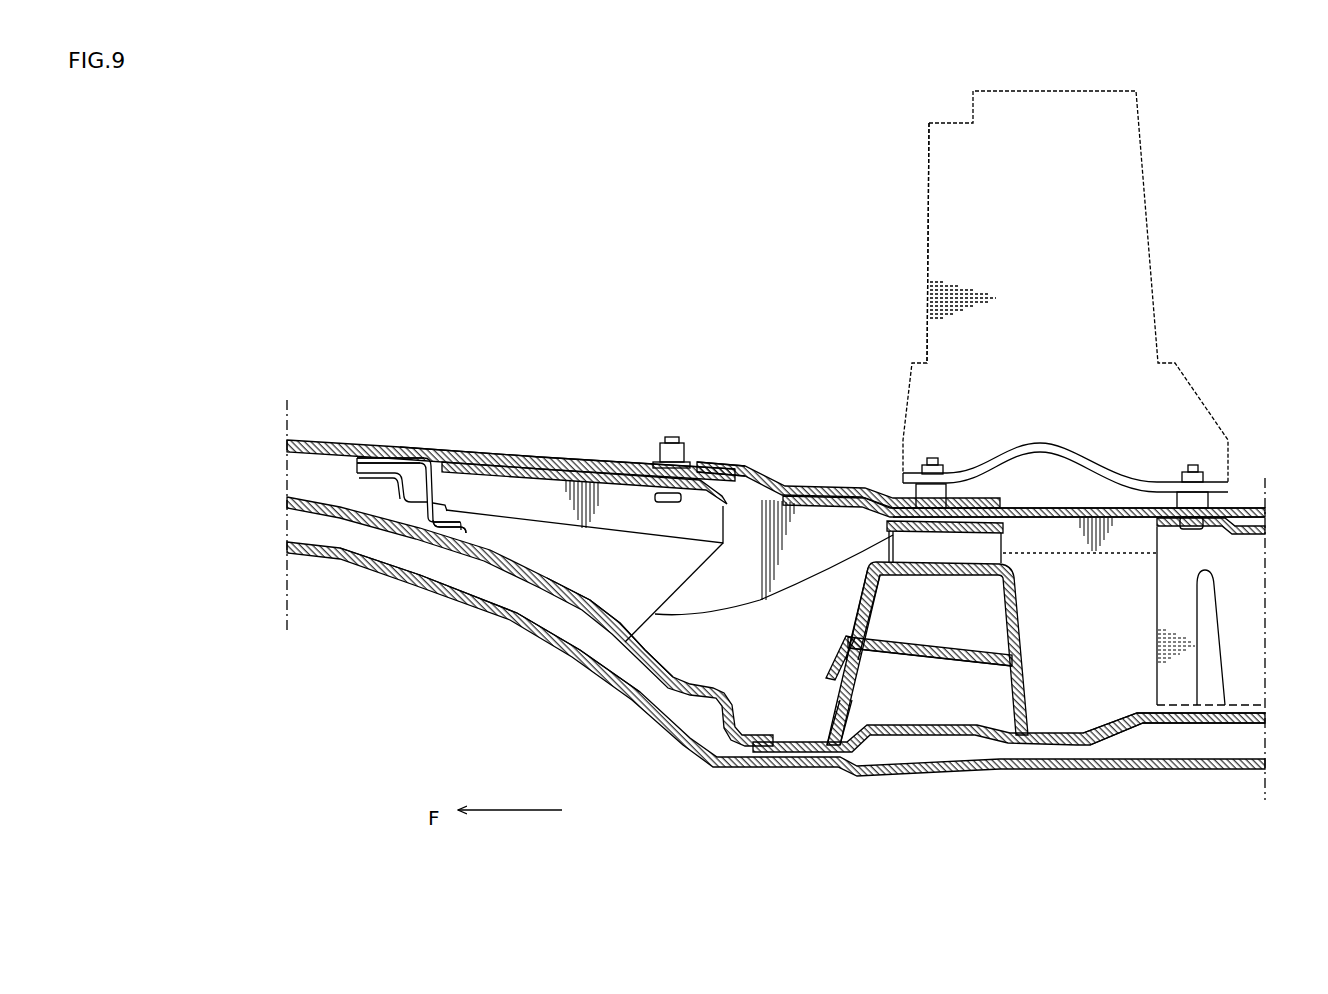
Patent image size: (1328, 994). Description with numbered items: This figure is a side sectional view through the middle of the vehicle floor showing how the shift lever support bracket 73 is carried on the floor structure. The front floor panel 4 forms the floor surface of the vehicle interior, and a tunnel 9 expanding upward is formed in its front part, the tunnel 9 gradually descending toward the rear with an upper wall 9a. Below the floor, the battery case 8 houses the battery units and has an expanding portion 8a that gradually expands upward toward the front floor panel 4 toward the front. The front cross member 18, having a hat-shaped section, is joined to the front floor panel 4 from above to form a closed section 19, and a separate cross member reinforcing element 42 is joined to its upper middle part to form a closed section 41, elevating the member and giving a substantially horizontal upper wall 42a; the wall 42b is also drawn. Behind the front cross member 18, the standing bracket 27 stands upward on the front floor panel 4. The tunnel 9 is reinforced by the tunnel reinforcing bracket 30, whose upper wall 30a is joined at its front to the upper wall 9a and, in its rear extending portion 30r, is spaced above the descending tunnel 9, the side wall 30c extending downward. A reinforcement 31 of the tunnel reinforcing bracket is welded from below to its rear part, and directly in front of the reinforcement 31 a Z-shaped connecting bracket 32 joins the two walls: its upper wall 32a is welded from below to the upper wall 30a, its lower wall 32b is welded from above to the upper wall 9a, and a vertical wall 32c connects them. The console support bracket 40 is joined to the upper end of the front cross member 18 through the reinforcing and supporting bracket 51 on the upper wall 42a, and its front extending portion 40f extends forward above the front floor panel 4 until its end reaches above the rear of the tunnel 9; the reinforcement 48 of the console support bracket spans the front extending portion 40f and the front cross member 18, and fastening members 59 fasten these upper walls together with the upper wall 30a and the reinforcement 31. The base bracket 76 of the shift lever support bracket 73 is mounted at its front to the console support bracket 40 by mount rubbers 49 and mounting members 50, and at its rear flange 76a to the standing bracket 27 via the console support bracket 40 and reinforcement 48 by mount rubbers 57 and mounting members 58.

The shift lever support bracket 73 is at (1148, 160).
The base bracket 76 is at (1113, 233).
The flange of the base bracket 76a is at (1038, 444).
The mounting member 50 is at (935, 457).
The mount rubber 49 is at (948, 496).
The mounting member 58 is at (1190, 468).
The mount rubber 57 is at (1208, 503).
The tunnel reinforcing bracket 30 is at (470, 446).
The upper wall of the tunnel reinforcing bracket 30a is at (507, 456).
The rear extending portion of the tunnel reinforcing bracket 30r is at (573, 464).
The side wall of the tunnel reinforcing bracket 30c is at (620, 612).
The reinforcement of the tunnel reinforcing bracket 31 is at (613, 478).
The fastening member 59 is at (680, 442).
The console support bracket 40 is at (760, 464).
The front extending portion of the console support bracket 40f is at (723, 462).
The reinforcement of the console support bracket 48 is at (810, 493).
The upper wall of the cross member reinforcing element 42a is at (1030, 512).
The reinforcing and supporting bracket 51 is at (888, 535).
The connecting bracket 32 is at (425, 498).
The upper wall of the connecting bracket 32a is at (386, 446).
The lower wall of the connecting bracket 32b is at (460, 528).
The vertical wall of the connecting bracket 32c is at (437, 504).
The tunnel 9 is at (548, 576).
The upper wall of the tunnel 9a is at (572, 588).
The battery case 8 is at (1163, 770).
The expanding portion of the battery case 8a is at (515, 615).
The cross member reinforcing element 42 is at (1032, 641).
The front wall of cross member lower panel 42b is at (845, 618).
The closed section 41 is at (926, 633).
The closed section 19 is at (926, 695).
The front cross member 18 is at (830, 703).
The front floor panel 4 is at (1095, 733).
The standing bracket 27 is at (1156, 688).